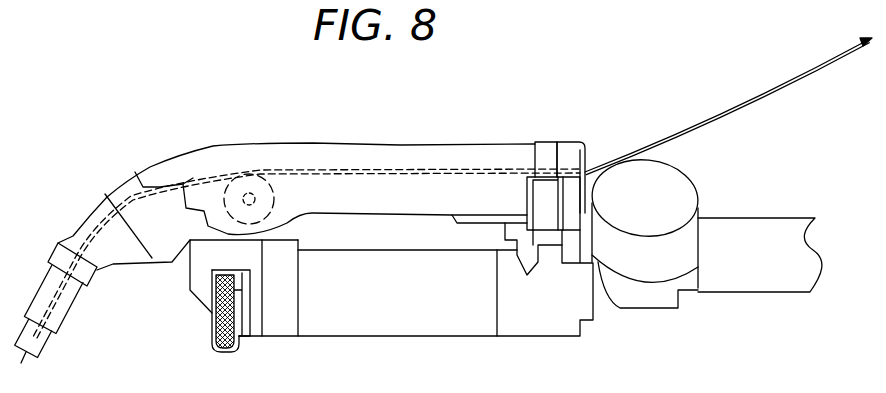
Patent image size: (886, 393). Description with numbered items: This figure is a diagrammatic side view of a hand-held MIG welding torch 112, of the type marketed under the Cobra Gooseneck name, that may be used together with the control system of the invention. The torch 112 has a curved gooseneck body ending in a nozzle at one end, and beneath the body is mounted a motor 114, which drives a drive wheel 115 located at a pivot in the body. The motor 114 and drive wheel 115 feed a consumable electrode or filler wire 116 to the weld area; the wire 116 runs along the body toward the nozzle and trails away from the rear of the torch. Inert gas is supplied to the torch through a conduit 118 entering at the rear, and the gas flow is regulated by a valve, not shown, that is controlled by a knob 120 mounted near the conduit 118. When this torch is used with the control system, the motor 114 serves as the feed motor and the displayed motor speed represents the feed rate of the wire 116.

The MIG torch 112 is at (435, 146).
The motor 114 is at (409, 311).
The drive wheel 115 is at (275, 193).
The filler wire 116 is at (677, 130).
The conduit 118 is at (747, 237).
The knob 120 is at (672, 195).